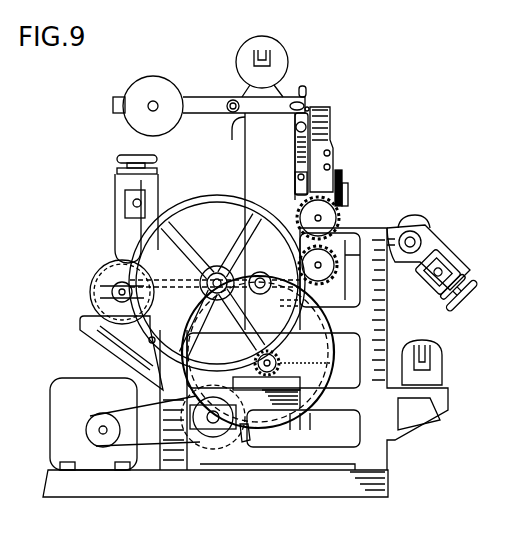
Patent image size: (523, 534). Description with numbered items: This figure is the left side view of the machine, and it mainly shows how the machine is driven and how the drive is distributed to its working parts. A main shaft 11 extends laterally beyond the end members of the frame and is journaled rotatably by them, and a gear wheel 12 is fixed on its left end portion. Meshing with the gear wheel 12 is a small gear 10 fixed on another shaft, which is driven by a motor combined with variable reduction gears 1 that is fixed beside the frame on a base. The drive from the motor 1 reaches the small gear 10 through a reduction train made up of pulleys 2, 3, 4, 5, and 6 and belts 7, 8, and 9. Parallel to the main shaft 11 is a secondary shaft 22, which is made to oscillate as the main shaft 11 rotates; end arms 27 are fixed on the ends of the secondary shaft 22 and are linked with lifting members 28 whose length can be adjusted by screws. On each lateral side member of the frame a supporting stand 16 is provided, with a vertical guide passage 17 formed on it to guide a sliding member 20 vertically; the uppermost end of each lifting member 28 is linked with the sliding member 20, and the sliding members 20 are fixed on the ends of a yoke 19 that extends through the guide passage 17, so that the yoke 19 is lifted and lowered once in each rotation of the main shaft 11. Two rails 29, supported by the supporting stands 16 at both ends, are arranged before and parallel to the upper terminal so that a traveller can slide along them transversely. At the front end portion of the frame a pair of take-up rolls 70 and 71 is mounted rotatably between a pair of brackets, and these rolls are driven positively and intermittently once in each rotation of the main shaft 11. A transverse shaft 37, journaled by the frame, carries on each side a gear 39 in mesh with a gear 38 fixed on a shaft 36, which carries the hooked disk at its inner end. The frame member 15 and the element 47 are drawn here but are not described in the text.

The motor combined with variable reduction gears 1 is at (50, 412).
The pulley 2 is at (246, 440).
The pulley 3 is at (216, 437).
The pulley 4 is at (90, 284).
The pulley 5 is at (125, 262).
The pulley 6 is at (300, 422).
The belt 7 is at (150, 447).
The belt 8 is at (114, 345).
The belt 9 is at (152, 343).
The small gear 10 is at (278, 365).
The main shaft 11 is at (217, 278).
The gear wheel 12 is at (193, 200).
The frame 15 is at (388, 330).
The supporting stand 16 is at (252, 148).
The vertical guide passage 17 is at (318, 120).
The yoke 19 is at (304, 90).
The sliding member 20 is at (309, 110).
The secondary shaft 22 is at (262, 276).
The end arm 27 is at (301, 298).
The lifting member 28 is at (295, 185).
The rail 29 is at (330, 166).
The shaft 36 is at (323, 217).
The shaft 37 is at (323, 262).
The gear 38 is at (330, 220).
The gear 39 is at (330, 270).
The latch bar 47 is at (344, 180).
The take-up roll 70 is at (418, 230).
The take-up roll 71 is at (455, 262).